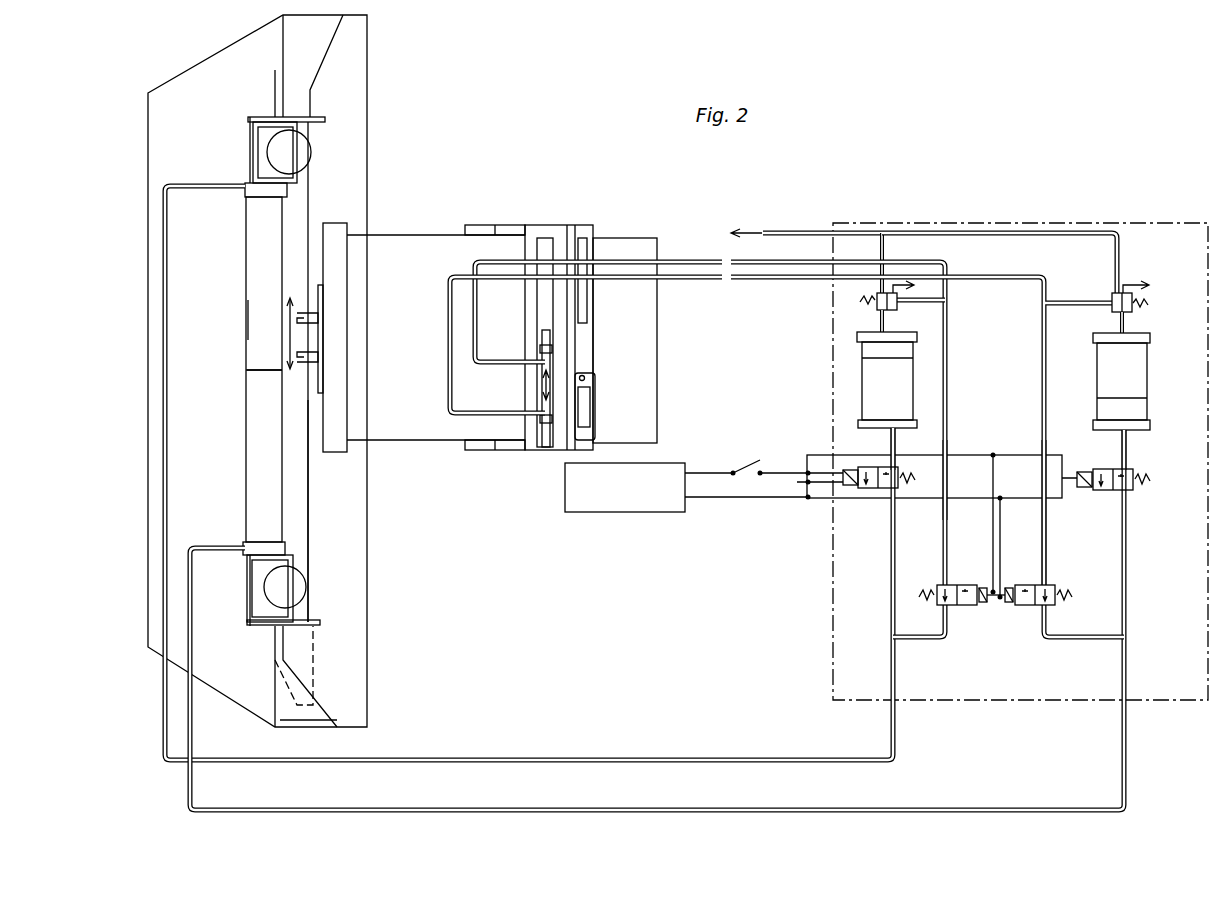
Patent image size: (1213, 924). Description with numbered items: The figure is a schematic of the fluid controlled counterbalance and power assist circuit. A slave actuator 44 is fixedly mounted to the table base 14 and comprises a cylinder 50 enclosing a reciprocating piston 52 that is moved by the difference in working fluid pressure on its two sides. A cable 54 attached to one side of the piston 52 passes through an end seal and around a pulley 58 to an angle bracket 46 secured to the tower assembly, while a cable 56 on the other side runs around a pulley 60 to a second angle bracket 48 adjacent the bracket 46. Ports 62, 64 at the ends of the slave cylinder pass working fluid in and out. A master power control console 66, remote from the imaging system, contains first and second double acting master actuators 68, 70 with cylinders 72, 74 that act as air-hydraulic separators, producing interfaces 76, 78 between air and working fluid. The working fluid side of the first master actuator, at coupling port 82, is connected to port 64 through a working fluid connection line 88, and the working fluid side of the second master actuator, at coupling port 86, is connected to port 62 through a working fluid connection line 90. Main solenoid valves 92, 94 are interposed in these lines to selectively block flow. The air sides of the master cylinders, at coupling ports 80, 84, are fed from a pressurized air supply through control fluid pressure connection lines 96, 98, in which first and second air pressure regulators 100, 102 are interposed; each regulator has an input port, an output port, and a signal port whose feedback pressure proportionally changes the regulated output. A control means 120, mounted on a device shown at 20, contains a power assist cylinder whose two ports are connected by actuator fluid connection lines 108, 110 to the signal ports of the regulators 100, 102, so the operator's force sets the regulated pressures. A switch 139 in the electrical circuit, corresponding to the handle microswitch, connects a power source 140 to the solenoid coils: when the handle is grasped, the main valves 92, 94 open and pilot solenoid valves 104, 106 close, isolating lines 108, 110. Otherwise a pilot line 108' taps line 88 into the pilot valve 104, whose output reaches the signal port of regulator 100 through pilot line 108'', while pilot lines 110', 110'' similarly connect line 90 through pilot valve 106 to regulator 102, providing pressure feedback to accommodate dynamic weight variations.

The table base 14 is at (180, 78).
The applicator assembly 20 is at (553, 222).
The slave actuator 44 is at (247, 300).
The angle bracket 46 is at (303, 312).
The second angle bracket 48 is at (305, 362).
The cylinder 50 is at (247, 330).
The piston 52 is at (247, 370).
The cable 54 is at (311, 198).
The cable 56 is at (309, 516).
The pulley 58 is at (310, 158).
The pulley 60 is at (306, 597).
The port 62 is at (247, 183).
The port 64 is at (244, 553).
The master power control console 66 is at (1153, 222).
The first master actuator 68 is at (868, 328).
The second master actuator 70 is at (1103, 333).
The cylinder 72 is at (862, 383).
The cylinder 74 is at (1097, 385).
The air-hydraulic interface 76 is at (905, 360).
The air-hydraulic interface 78 is at (1128, 398).
The coupling port 80 is at (893, 330).
The coupling port 82 is at (896, 432).
The coupling port 84 is at (1124, 333).
The coupling port 86 is at (1130, 431).
The working fluid connection line 88 is at (660, 808).
The working fluid connection line 90 is at (650, 757).
The main solenoid valve 92 is at (875, 490).
The main solenoid valve 94 is at (1104, 491).
The control fluid pressure connection line 96 is at (885, 250).
The control fluid pressure connection line 98 is at (1047, 236).
The first air pressure regulator 100 is at (876, 300).
The second air pressure regulator 102 is at (1110, 300).
The pilot solenoid valve 104 is at (952, 583).
The pilot solenoid valve 106 is at (1027, 608).
The actuator fluid connection line 108 is at (710, 392).
The actuator fluid connection line 110 is at (765, 431).
The pilot line 108' is at (932, 639).
The pilot line 110' is at (1084, 620).
The pilot line 108'' is at (972, 480).
The pilot line 110'' is at (1074, 512).
The control means 120 is at (524, 385).
The switch 139 is at (746, 462).
The power source 140 is at (642, 513).